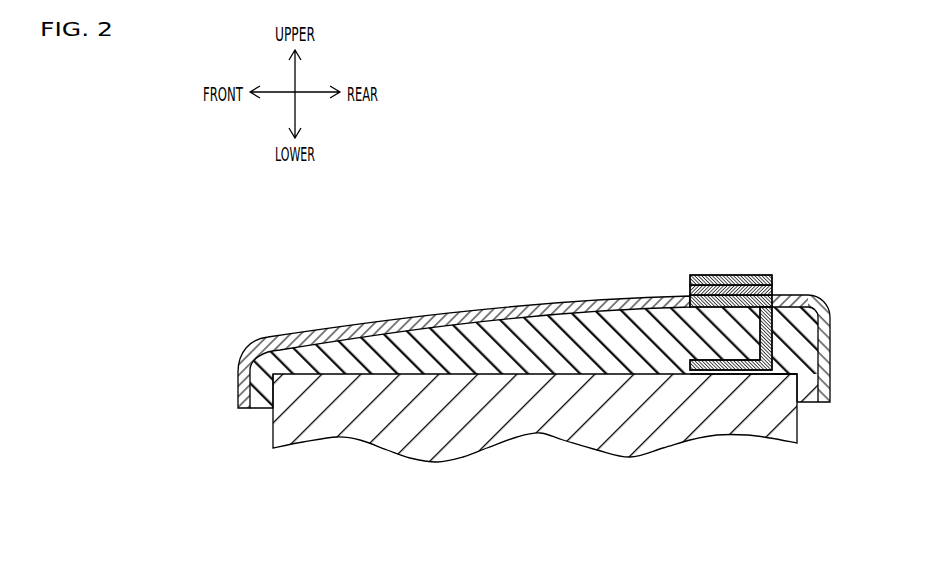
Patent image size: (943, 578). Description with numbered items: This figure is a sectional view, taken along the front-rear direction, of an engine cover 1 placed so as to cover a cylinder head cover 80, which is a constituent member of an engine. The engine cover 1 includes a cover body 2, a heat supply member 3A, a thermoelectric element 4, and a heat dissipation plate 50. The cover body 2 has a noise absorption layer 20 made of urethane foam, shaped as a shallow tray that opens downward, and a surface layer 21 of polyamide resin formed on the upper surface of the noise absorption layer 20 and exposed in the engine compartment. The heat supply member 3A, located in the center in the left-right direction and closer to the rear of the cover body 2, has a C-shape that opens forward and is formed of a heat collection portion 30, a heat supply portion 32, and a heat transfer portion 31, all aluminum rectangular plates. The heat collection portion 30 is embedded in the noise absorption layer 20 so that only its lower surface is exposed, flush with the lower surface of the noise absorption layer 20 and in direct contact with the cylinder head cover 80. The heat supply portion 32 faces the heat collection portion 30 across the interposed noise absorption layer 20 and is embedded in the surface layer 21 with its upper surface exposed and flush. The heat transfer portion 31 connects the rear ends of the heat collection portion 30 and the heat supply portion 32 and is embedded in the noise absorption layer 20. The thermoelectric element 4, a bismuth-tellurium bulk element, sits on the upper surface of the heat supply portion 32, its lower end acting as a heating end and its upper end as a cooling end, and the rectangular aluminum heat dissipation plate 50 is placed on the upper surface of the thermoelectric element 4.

The engine cover 1 is at (758, 166).
The cover body 2 is at (380, 222).
The noise absorption layer 20 is at (443, 338).
The surface layer 21 is at (458, 318).
The heat supply member 3A is at (790, 300).
The heat transfer portion 31 is at (778, 347).
The heat supply portion 32 is at (706, 309).
The thermoelectric element 4 is at (713, 290).
The heat dissipation plate 50 is at (765, 277).
The heat collection portion 30 is at (713, 374).
The cylinder head cover 80 is at (363, 430).